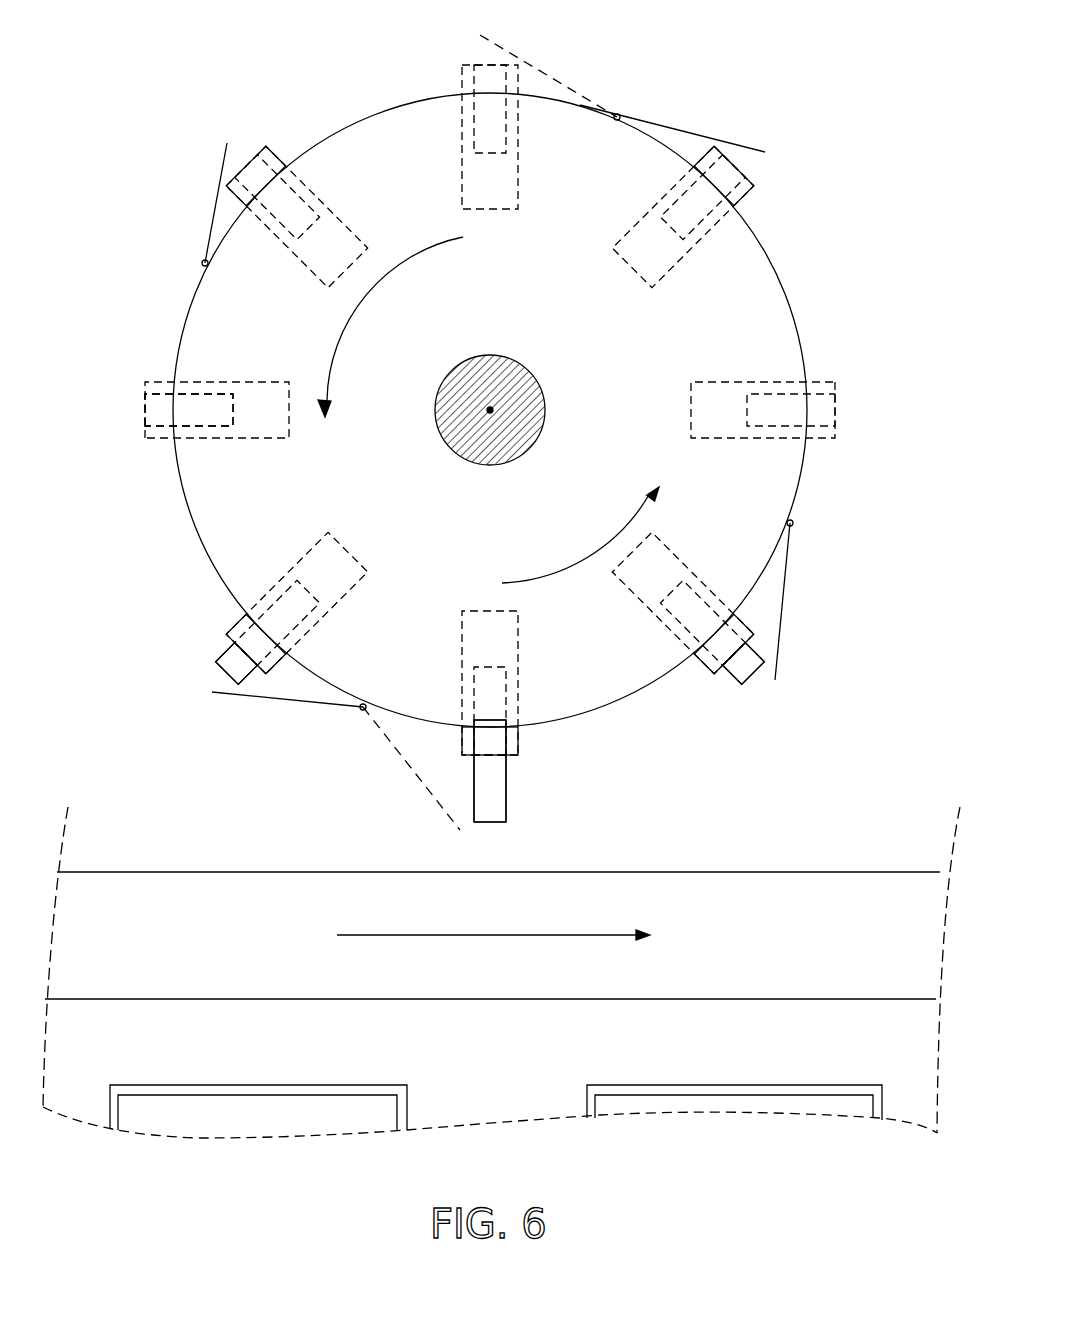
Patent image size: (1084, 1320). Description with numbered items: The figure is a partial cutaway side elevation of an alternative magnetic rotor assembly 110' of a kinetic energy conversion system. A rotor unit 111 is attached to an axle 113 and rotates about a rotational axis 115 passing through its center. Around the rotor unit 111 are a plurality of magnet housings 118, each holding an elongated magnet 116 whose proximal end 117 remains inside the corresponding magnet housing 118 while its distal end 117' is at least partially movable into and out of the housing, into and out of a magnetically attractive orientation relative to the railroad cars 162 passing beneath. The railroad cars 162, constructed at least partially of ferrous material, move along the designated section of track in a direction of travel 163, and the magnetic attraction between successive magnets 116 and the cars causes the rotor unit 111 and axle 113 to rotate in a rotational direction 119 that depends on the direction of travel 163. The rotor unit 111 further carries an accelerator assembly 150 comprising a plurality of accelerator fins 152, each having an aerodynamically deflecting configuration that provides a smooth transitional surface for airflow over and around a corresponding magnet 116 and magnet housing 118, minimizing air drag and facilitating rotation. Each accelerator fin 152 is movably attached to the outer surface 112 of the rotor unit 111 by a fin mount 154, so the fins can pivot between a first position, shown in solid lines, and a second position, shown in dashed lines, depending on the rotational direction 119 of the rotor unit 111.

The accelerator assembly 150 is at (501, 569).
The magnetic rotor assembly 110' is at (493, 454).
The rotor unit 111 is at (777, 272).
The outer surface 112 is at (800, 488).
The axle 113 is at (543, 397).
The rotational axis 115 is at (495, 411).
The magnet 116 is at (198, 394).
The proximal end 117 is at (490, 410).
The distal end 117' is at (449, 607).
The magnet housing 118 is at (155, 438).
The rotational direction 119 is at (330, 377).
The accelerator fin 152 is at (717, 136).
The fin mount 154 is at (619, 114).
The railroad car 162 is at (848, 963).
The direction of travel 163 is at (422, 935).